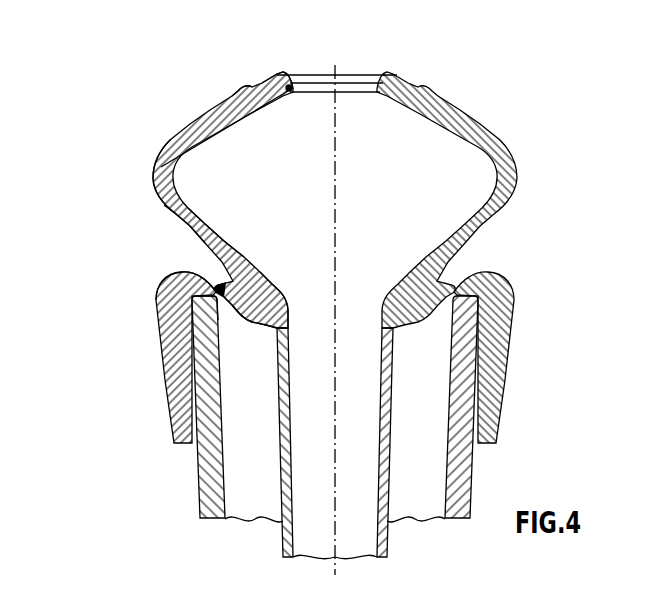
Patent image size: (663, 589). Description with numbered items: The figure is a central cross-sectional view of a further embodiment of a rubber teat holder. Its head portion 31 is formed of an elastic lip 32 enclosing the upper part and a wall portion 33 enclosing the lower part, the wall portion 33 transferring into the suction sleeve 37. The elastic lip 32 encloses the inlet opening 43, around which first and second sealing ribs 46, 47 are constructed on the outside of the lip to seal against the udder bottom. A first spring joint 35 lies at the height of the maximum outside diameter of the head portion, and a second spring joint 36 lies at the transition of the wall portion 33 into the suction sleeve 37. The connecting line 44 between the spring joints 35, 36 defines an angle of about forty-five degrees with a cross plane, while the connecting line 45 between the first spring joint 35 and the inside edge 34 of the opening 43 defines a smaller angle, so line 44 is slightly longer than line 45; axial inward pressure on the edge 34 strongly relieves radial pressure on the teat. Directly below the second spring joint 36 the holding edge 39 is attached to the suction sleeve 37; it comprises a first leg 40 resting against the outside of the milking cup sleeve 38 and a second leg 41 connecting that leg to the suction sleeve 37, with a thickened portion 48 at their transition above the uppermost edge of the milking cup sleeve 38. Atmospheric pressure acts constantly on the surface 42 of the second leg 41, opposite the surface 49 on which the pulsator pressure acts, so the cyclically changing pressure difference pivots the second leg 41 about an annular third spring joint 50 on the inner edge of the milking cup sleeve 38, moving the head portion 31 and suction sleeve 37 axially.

The head portion 31 is at (160, 147).
The elastic lip 32 is at (195, 124).
The wall portion 33 is at (173, 213).
The inside edge 34 is at (292, 75).
The first spring joint 35 is at (163, 165).
The second spring joint 36 is at (278, 289).
The suction sleeve 37 is at (282, 538).
The milking cup sleeve 38 is at (197, 463).
The holding edge 39 is at (150, 304).
The first leg 40 is at (165, 408).
The second leg 41 is at (251, 324).
The surface 42 is at (216, 289).
The inlet opening 43 is at (358, 74).
The connecting line 44 is at (228, 220).
The connecting line 45 is at (233, 124).
The first sealing rib 46 is at (275, 72).
The second sealing rib 47 is at (244, 87).
The thickened portion 48 is at (160, 283).
The surface 49 is at (214, 294).
The third spring joint 50 is at (288, 312).